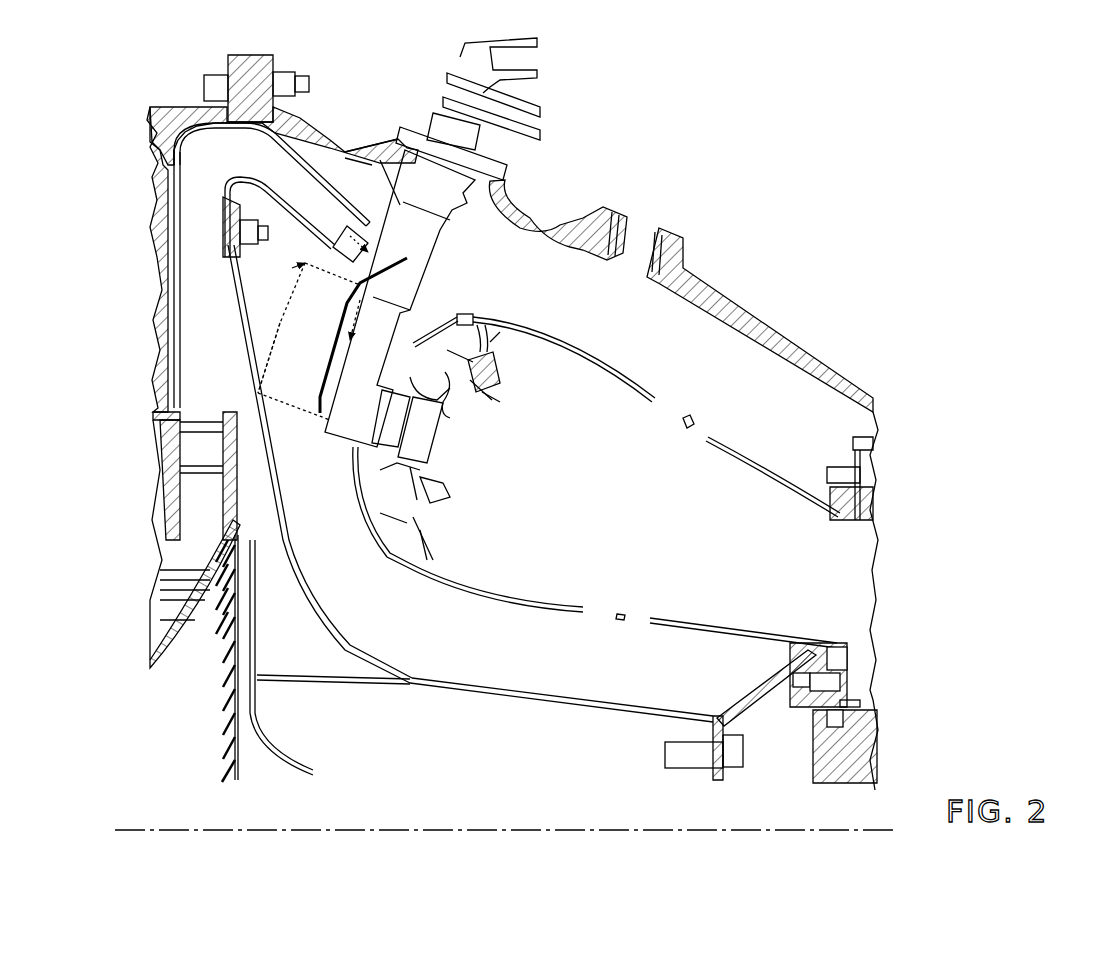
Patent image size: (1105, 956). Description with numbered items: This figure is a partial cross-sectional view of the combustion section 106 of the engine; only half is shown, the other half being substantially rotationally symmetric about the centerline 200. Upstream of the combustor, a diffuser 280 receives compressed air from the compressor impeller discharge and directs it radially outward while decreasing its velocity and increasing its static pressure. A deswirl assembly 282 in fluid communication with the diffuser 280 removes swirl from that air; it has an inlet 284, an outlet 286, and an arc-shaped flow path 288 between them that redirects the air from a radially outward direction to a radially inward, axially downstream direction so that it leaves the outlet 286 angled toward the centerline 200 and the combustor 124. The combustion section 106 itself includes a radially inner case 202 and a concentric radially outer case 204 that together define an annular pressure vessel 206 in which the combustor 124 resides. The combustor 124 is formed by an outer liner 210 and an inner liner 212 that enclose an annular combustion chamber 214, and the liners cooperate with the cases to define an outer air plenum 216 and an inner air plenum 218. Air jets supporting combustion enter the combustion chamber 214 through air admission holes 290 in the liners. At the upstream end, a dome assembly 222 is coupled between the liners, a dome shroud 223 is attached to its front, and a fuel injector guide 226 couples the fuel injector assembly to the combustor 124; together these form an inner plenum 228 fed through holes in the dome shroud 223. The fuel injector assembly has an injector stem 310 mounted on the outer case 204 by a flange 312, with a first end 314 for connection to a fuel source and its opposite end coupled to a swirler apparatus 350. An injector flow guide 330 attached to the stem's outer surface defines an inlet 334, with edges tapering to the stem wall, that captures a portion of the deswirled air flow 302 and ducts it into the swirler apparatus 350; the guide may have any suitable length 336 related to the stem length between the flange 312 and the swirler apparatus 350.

The combustion section 106 is at (727, 237).
The combustor 124 is at (403, 590).
The centerline 200 is at (167, 828).
The radially inner case 202 is at (547, 703).
The radially outer case 204 is at (737, 323).
The annular pressure vessel 206 is at (417, 652).
The outer liner 210 is at (593, 354).
The inner liner 212 is at (487, 597).
The annular combustion chamber 214 is at (648, 518).
The outer air plenum 216 is at (760, 401).
The inner air plenum 218 is at (648, 678).
The dome assembly 222 is at (492, 366).
The dome shroud 223 is at (430, 320).
The fuel injector guide 226 is at (440, 393).
The inner plenum 228 is at (390, 488).
The diffuser 280 is at (190, 290).
The deswirl assembly 282 is at (233, 128).
The inlet 284 is at (192, 153).
The outlet 286 is at (360, 170).
The flow path 288 is at (266, 171).
The air admission holes 290 is at (660, 413).
The air flow 302 is at (295, 298).
The injector stem 310 is at (455, 220).
The flange 312 is at (507, 173).
The first end 314 is at (527, 97).
The injector flow guide 330 is at (328, 370).
The inlet 334 is at (378, 236).
The length 336 is at (276, 352).
The swirler apparatus 350 is at (340, 432).